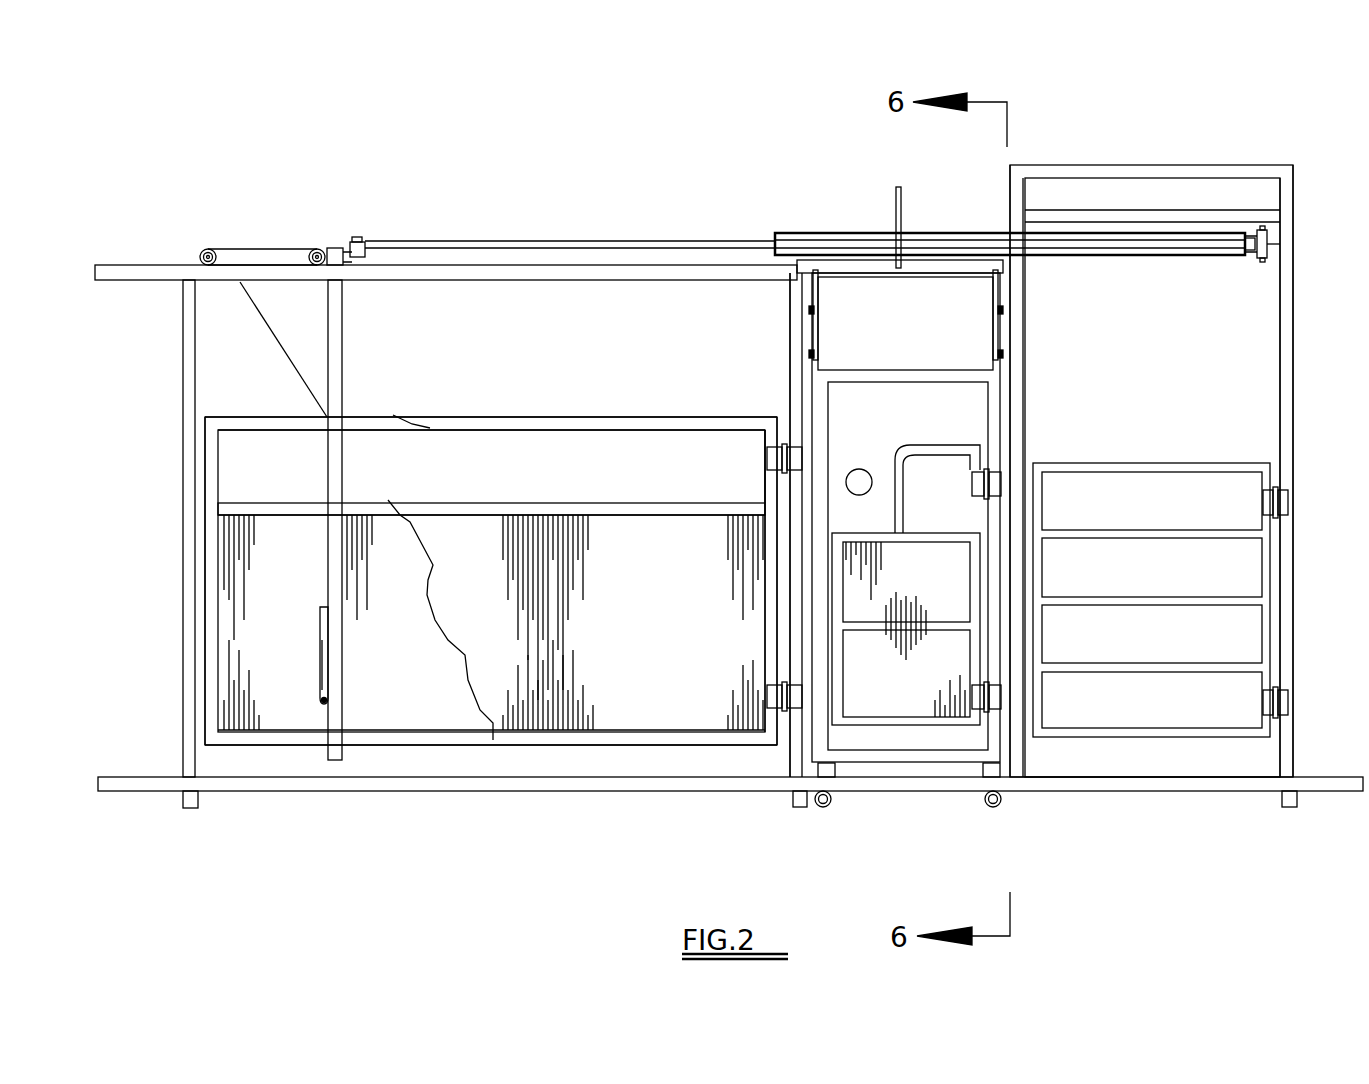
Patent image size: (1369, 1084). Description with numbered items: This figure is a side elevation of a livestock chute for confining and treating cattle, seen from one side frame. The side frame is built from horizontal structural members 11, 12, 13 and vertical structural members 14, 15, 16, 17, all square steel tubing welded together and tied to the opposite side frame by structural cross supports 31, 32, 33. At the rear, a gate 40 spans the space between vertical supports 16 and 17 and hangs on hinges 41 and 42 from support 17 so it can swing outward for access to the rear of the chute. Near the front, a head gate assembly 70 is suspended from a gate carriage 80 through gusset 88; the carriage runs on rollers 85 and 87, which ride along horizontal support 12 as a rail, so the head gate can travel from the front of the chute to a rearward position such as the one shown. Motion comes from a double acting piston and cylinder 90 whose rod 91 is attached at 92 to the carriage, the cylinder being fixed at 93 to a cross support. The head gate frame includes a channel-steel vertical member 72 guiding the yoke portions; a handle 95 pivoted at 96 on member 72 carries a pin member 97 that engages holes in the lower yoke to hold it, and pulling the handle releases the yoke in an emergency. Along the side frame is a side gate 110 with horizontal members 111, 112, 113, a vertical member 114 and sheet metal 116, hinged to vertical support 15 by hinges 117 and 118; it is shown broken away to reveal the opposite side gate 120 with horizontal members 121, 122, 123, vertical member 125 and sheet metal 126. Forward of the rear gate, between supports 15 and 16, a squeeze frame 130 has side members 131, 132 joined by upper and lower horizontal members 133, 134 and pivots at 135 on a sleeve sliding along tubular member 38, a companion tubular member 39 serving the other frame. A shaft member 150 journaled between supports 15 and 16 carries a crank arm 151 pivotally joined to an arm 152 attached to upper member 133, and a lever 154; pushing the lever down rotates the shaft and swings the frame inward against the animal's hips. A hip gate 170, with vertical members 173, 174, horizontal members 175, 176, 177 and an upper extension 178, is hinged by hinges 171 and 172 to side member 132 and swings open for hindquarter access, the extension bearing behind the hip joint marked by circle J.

The horizontal structural member 11 is at (525, 790).
The horizontal structural member 12 is at (520, 278).
The horizontal structural member 13 is at (1145, 168).
The vertical structural member 14 is at (190, 320).
The vertical structural member 15 is at (797, 380).
The vertical structural member 16 is at (1020, 378).
The vertical structural member 17 is at (1288, 395).
The structural cross support 31 is at (190, 808).
The structural cross support 32 is at (797, 807).
The structural cross support 33 is at (1295, 808).
The tubular member 38 is at (995, 808).
The tubular member 39 is at (823, 807).
The gate 40 is at (1168, 755).
The hinge 41 is at (1290, 700).
The hinge 42 is at (1290, 502).
The head gate assembly 70 is at (365, 645).
The vertical member 72 is at (330, 577).
The gate carriage 80 is at (238, 191).
The roller 85 is at (206, 250).
The roller 87 is at (287, 233).
The gusset 88 is at (292, 335).
The double acting piston and cylinder 90 is at (1205, 255).
The rod 91 is at (625, 242).
The attachment point 92 is at (360, 240).
The fixed attachment point 93 is at (1268, 245).
The handle 95 is at (328, 615).
The pivot 96 is at (328, 702).
The pin member 97 is at (330, 668).
The side gate 110 is at (612, 722).
The horizontal member 111 is at (552, 737).
The horizontal member 112 is at (598, 505).
The horizontal member 113 is at (590, 418).
The vertical member 114 is at (772, 625).
The sheet metal 116 is at (658, 708).
The hinge 117 is at (770, 690).
The hinge 118 is at (767, 458).
The side gate 120 is at (437, 570).
The horizontal member 121 is at (290, 745).
The horizontal member 122 is at (248, 505).
The horizontal member 123 is at (240, 420).
The vertical member 125 is at (212, 575).
The sheet metal 126 is at (390, 545).
The squeeze frame 130 is at (887, 350).
The side member 131 is at (770, 433).
The side member 132 is at (1003, 410).
The upper horizontal member 133 is at (928, 378).
The lower horizontal member 134 is at (870, 757).
The pivot 135 is at (815, 768).
The shaft member 150 is at (925, 266).
The crank arm 151 is at (813, 297).
The arm 152 is at (812, 320).
The lever 154 is at (895, 205).
The hip gate 170 is at (928, 750).
The hinge 171 is at (1040, 492).
The hinge 172 is at (1040, 697).
The vertical member 173 is at (978, 645).
The vertical member 174 is at (835, 583).
The horizontal member 175 is at (867, 717).
The horizontal member 176 is at (1040, 582).
The horizontal member 177 is at (957, 540).
The upper extension 178 is at (970, 448).
The hip joint area J is at (862, 470).